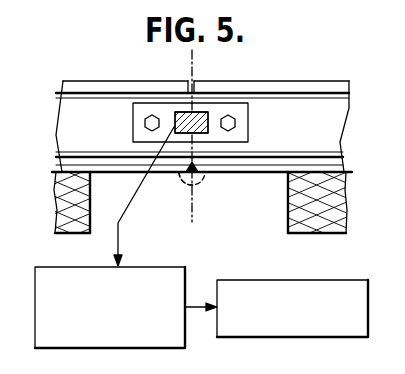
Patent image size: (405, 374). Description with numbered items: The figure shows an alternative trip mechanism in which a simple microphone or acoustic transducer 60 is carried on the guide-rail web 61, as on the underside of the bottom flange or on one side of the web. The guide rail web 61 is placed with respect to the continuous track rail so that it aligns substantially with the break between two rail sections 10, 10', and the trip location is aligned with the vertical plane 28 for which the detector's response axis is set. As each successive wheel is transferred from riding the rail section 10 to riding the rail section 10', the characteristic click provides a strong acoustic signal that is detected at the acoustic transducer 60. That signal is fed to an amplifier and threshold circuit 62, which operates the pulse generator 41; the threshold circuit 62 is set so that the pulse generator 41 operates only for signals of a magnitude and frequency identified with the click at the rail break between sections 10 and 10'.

The vertical plane 28 is at (186, 58).
The acoustic transducer 60 is at (209, 116).
The guide-rail web 61 is at (341, 112).
The rail section 10 is at (207, 179).
The rail section 10' is at (169, 184).
The amplifier and threshold circuit 62 is at (100, 265).
The pulse generator 41 is at (288, 258).